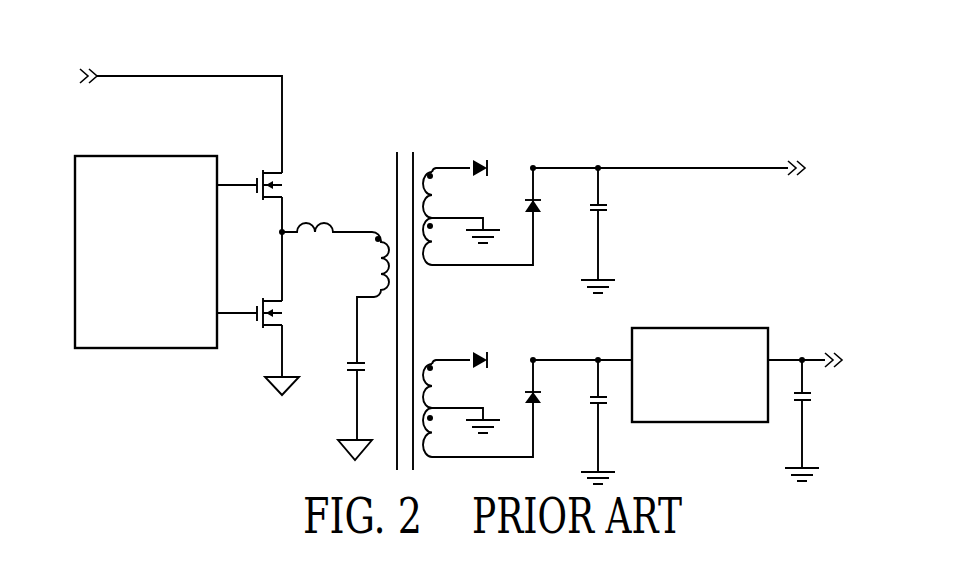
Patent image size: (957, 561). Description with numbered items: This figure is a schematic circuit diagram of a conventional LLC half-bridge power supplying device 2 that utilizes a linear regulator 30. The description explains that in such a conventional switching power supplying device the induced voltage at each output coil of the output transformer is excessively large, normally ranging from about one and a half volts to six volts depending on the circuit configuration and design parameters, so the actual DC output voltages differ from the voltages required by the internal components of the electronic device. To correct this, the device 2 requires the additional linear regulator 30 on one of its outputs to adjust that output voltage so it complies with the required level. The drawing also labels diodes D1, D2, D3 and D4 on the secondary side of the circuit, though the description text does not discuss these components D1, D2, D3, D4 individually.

The LLC half-bridge power supplying device 2 is at (678, 121).
The linear regulator 30 is at (737, 327).
The rectifier diode D1 is at (483, 157).
The rectifier diode D2 is at (483, 349).
The rectifier diode D3 is at (549, 206).
The rectifier diode D4 is at (549, 398).